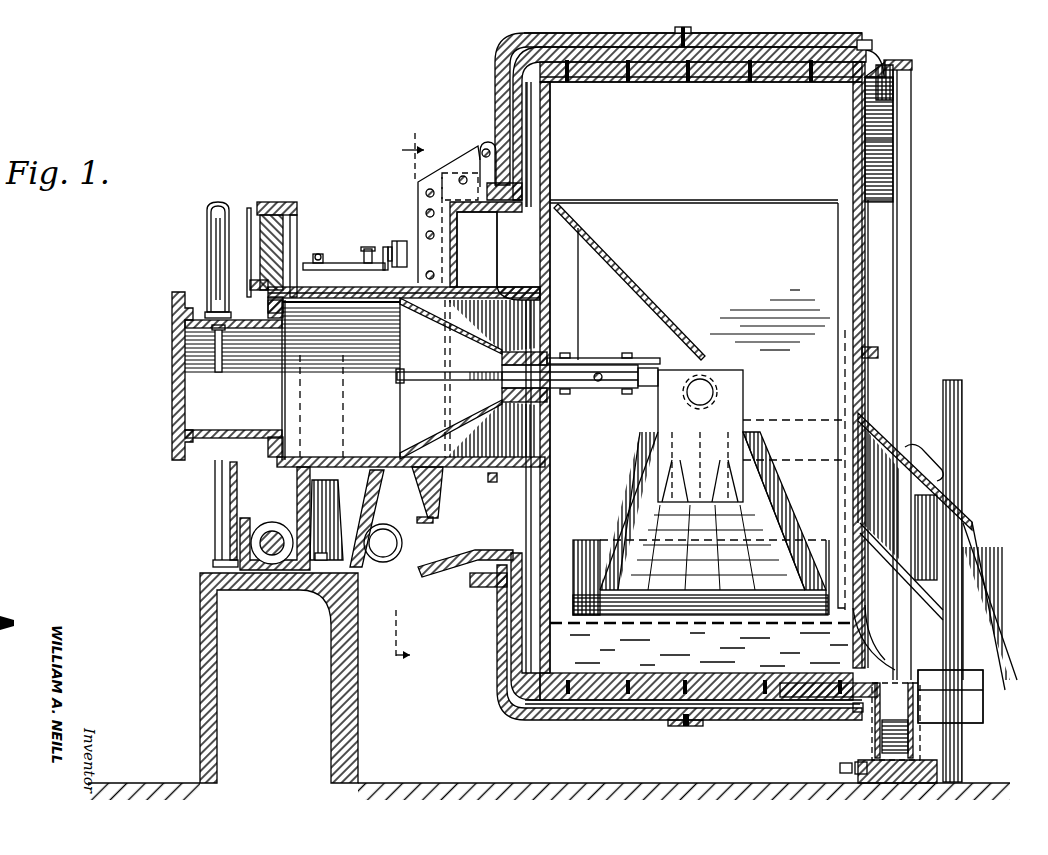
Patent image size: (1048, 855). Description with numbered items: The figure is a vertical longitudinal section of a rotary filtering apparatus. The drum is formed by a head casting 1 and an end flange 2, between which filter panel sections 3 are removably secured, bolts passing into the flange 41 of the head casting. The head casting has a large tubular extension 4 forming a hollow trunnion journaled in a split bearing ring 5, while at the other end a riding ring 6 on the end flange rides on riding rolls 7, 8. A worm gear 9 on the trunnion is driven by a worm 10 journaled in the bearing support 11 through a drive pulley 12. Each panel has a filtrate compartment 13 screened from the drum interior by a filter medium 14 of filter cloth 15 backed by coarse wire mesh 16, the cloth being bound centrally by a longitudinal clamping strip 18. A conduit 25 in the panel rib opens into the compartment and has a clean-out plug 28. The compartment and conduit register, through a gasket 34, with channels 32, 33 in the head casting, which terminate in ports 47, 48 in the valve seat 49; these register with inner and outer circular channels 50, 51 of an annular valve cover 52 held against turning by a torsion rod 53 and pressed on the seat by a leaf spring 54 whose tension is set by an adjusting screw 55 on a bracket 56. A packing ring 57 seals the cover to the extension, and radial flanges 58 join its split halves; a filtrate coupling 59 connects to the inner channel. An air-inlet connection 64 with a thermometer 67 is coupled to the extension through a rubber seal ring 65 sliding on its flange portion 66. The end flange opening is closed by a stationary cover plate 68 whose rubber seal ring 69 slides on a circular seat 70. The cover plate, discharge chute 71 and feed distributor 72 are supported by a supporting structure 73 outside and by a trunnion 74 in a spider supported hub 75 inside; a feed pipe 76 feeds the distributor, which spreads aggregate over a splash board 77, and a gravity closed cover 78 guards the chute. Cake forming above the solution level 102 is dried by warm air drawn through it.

The head casting 1 is at (500, 107).
The end flange 2 is at (905, 96).
The filter panel sections 3 is at (858, 43).
The tubular extension 4 is at (398, 284).
The split bearing ring 5 is at (333, 519).
The riding ring 6 is at (906, 66).
The riding roll 7 is at (925, 762).
The riding roll 8 is at (880, 728).
The worm gear 9 is at (268, 220).
The worm 10 is at (268, 562).
The bearing support 11 is at (263, 546).
The drive pulley 12 is at (236, 532).
The filtrate compartment 13 is at (652, 702).
The filter medium 14 is at (756, 80).
The filter cloth 15 is at (654, 80).
The coarse wire mesh 16 is at (709, 80).
The longitudinal clamping strip 18 is at (788, 78).
The conduit 25 is at (757, 34).
The plug 28 is at (870, 47).
The channel 32 is at (550, 190).
The channel 33 is at (514, 128).
The gasket 34 is at (507, 53).
The flange 41 is at (496, 83).
The port 47 is at (498, 227).
The port 48 is at (462, 174).
The valve seat 49 is at (498, 278).
The inner circular channel 50 is at (380, 505).
The outer circular channel 51 is at (497, 587).
The annular valve cover 52 is at (440, 212).
The torsion rod 53 is at (392, 490).
The leaf spring 54 is at (399, 242).
The adjusting screw 55 is at (372, 236).
The bracket 56 is at (362, 268).
The packing ring 57 is at (476, 486).
The radial flanges 58 is at (479, 156).
The filtrate coupling 59 is at (377, 562).
The air-inlet connection 64 is at (175, 334).
The rubber seal ring 65 is at (262, 287).
The flange portion 66 is at (272, 478).
The thermometer 67 is at (207, 222).
The cover plate 68 is at (866, 278).
The rubber seal ring 69 is at (880, 164).
The circular seat 70 is at (893, 143).
The discharge chute 71 is at (662, 280).
The feed distributor 72 is at (640, 480).
The supporting structure 73 is at (958, 563).
The trunnion 74 is at (561, 356).
The spider supported hub 75 is at (500, 390).
The feed pipe 76 is at (826, 423).
The splash board 77 is at (808, 546).
The gravity closed cover 78 is at (993, 605).
The solution level 102 is at (556, 632).